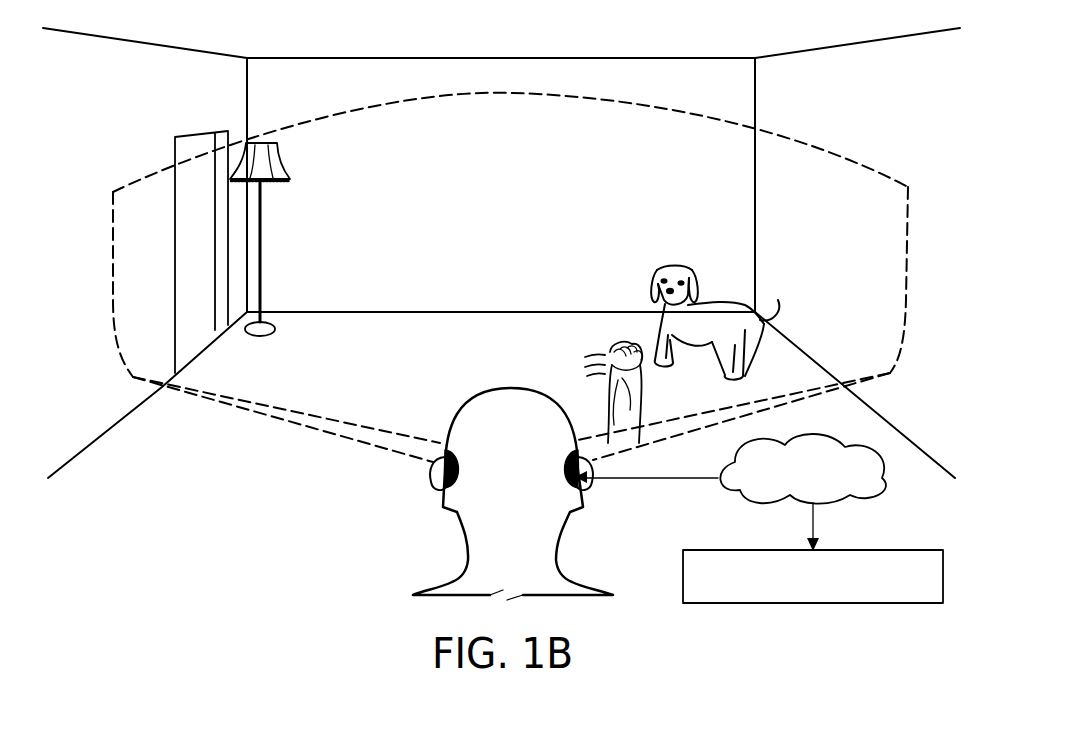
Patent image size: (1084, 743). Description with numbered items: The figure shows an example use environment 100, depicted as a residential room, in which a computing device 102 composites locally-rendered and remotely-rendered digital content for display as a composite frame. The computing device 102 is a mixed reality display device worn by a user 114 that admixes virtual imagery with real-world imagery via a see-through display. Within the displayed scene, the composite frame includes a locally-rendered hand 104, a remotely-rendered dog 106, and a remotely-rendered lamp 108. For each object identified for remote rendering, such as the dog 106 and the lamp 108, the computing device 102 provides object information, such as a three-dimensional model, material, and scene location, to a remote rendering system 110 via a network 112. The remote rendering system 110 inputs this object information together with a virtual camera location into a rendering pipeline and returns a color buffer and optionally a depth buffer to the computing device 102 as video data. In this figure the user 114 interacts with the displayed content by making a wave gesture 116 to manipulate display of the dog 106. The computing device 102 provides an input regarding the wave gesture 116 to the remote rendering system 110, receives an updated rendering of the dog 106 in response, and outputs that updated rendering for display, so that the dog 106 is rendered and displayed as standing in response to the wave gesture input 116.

The use environment 100 is at (322, 46).
The computing device 102 is at (440, 466).
The locally-rendered hand 104 is at (640, 393).
The remotely-rendered dog 106 is at (664, 268).
The remotely-rendered lamp 108 is at (280, 149).
The remote rendering system 110 is at (813, 576).
The network 112 is at (730, 492).
The user 114 is at (513, 494).
The wave gesture 116 is at (574, 366).